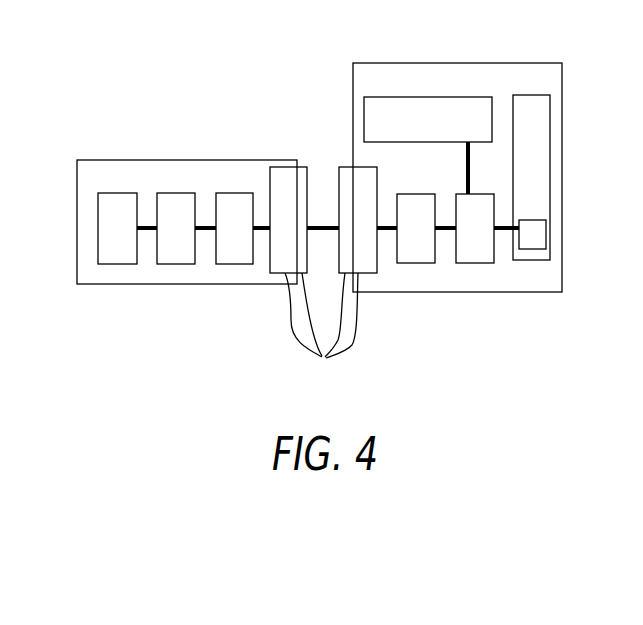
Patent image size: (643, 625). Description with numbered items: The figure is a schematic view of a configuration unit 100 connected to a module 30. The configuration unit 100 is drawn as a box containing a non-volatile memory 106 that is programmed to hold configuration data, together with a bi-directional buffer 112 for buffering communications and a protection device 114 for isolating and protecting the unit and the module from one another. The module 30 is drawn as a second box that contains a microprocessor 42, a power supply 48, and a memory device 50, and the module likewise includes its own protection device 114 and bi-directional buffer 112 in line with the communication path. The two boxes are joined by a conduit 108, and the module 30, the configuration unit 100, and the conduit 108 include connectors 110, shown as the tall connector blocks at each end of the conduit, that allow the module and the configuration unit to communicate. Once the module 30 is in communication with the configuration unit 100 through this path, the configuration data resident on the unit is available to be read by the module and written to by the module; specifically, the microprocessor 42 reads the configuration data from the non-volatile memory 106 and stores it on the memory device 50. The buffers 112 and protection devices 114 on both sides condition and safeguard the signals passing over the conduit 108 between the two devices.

The module 30 is at (553, 70).
The microprocessor 42 is at (541, 182).
The power supply 48 is at (438, 134).
The memory device 50 is at (532, 234).
The configuration unit 100 is at (145, 160).
The non-volatile memory 106 is at (131, 243).
The conduit 108 is at (323, 226).
The connectors 110 is at (321, 330).
The bi-directional buffer 112 is at (190, 243).
The protection device 114 is at (249, 243).